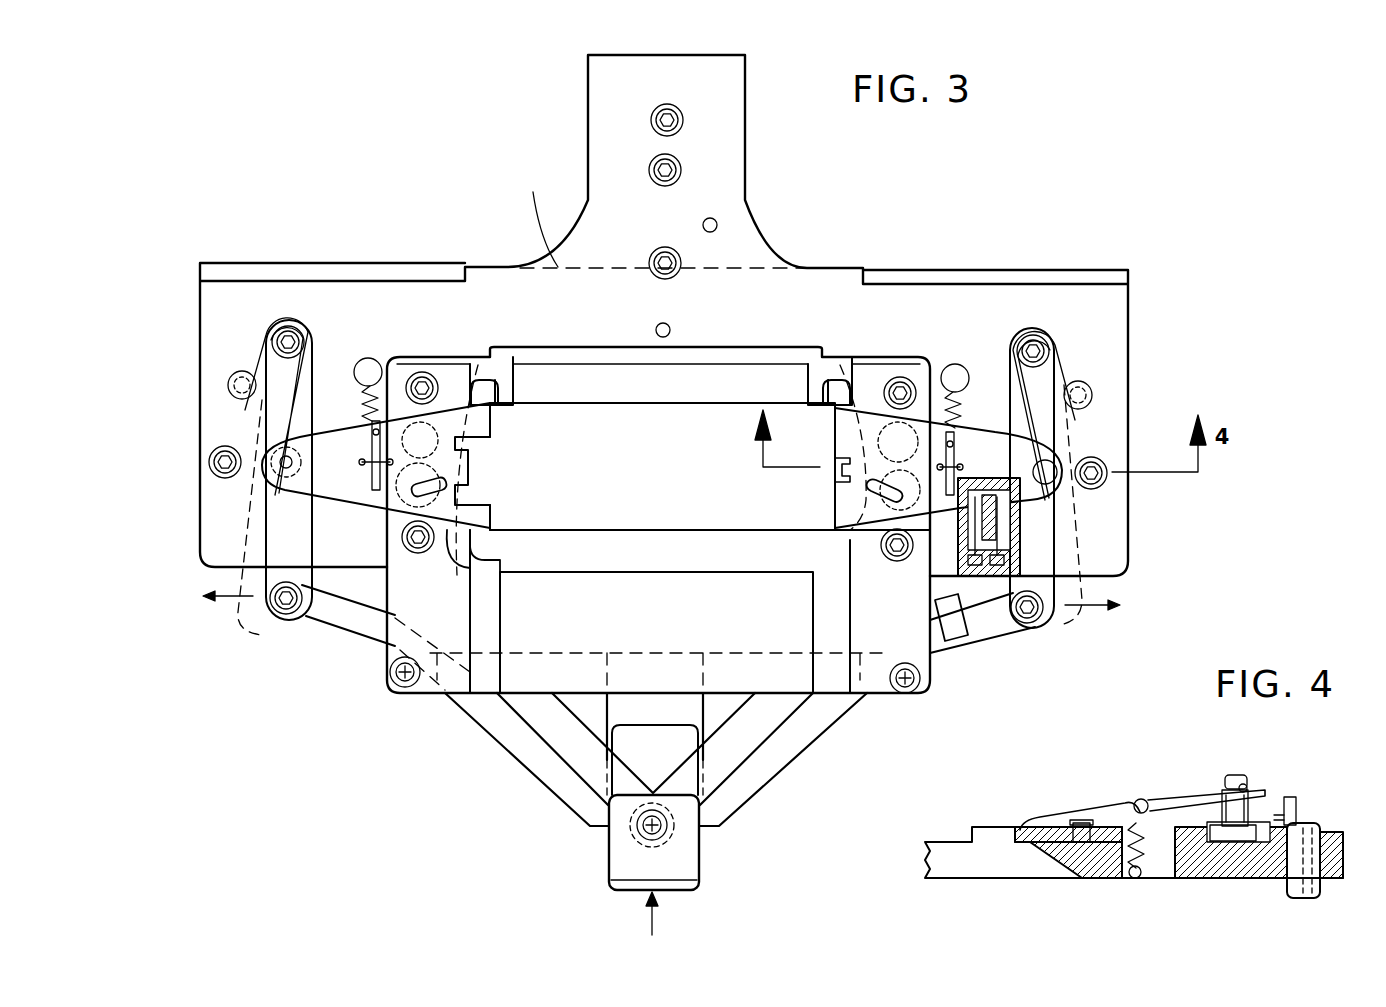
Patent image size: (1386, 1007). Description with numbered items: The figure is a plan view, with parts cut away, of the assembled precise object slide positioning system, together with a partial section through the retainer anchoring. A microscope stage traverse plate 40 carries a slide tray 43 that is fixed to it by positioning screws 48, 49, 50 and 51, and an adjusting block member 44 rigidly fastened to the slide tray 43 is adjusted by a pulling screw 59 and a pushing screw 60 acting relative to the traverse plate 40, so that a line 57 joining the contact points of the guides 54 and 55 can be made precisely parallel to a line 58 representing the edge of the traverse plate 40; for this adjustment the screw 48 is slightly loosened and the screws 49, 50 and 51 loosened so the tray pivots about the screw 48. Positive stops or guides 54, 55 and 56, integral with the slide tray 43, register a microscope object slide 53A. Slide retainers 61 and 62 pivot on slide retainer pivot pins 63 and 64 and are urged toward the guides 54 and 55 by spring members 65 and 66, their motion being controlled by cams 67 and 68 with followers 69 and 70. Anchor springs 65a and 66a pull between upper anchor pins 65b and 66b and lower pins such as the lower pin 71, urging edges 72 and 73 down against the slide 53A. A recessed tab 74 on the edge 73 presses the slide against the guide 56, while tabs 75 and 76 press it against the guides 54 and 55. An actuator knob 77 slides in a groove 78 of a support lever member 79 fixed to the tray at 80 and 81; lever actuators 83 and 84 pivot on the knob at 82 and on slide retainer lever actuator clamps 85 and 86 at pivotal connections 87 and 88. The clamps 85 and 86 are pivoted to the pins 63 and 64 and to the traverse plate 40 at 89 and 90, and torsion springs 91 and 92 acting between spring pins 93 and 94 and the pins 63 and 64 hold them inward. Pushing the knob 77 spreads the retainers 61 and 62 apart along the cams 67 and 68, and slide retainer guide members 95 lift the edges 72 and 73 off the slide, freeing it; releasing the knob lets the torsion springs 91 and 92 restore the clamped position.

In FIG. 3, the microscope stage traverse plate 40 is at (1140, 310).
In FIG. 3, the slide tray 43 is at (880, 703).
In FIG. 3, the adjusting block member 44 is at (1025, 525).
In FIG. 3, the positioning screw 48 is at (432, 378).
In FIG. 3, the positioning screw 49 is at (417, 556).
In FIG. 3, the positioning screw 50 is at (908, 560).
In FIG. 3, the positioning screw 51 is at (877, 370).
In FIG. 3, the microscope object slide 53A is at (592, 513).
In FIG. 3, the positive stop or guide 54 is at (518, 385).
In FIG. 3, the positive stop or guide 55 is at (805, 395).
In FIG. 3, the positive stop or guide 56 is at (478, 462).
In FIG. 3, the line joining guide contact points 57 is at (650, 400).
In FIG. 3, the edge line of stage traverse plate 58 is at (535, 217).
In FIG. 3, the pulling screw 59 is at (985, 572).
In FIG. 3, the pushing screw 60 is at (993, 580).
In FIG. 3, the slide retainer 61 is at (348, 493).
In FIG. 3, the slide retainer 62 is at (830, 433).
In FIG. 3, the slide retainer pivot pin 63 is at (302, 487).
In FIG. 3, the slide retainer pivot pin 64 is at (1000, 558).
In FIG. 4, the slide retainer pivot pin 64 is at (1238, 772).
In FIG. 3, the slide retainer spring member 65 is at (356, 366).
In FIG. 3, the anchor spring 65a is at (362, 462).
In FIG. 3, the upper anchor pin 65b is at (345, 420).
In FIG. 3, the slide retainer spring member 66 is at (968, 378).
In FIG. 3, the anchor spring 66a is at (945, 412).
In FIG. 4, the anchor spring 66a is at (1212, 880).
In FIG. 3, the upper anchor pin 66b is at (942, 467).
In FIG. 4, the upper anchor pin 66b is at (1143, 795).
In FIG. 3, the cam 67 is at (440, 490).
In FIG. 3, the cam 68 is at (870, 490).
In FIG. 3, the follower 69 is at (428, 480).
In FIG. 3, the follower 70 is at (897, 506).
In FIG. 4, the lower pin 71 is at (1140, 880).
In FIG. 3, the edge of slide retainer 72 is at (500, 420).
In FIG. 3, the edge of slide retainer 73 is at (830, 437).
In FIG. 3, the recessed tab 74 is at (840, 472).
In FIG. 3, the tab 75 is at (492, 538).
In FIG. 3, the tab 76 is at (820, 538).
In FIG. 3, the actuator knob 77 is at (688, 860).
In FIG. 3, the groove 78 is at (650, 748).
In FIG. 3, the support lever member 79 is at (625, 705).
In FIG. 3, the fastening point 80 is at (390, 680).
In FIG. 3, the fastening point 81 is at (896, 692).
In FIG. 3, the pivotal attachment 82 is at (645, 837).
In FIG. 3, the lever actuator 83 is at (320, 632).
In FIG. 3, the lever actuator 84 is at (987, 638).
In FIG. 3, the slide retainer lever actuator clamp 85 is at (277, 553).
In FIG. 3, the slide retainer lever actuator clamp 86 is at (1065, 436).
In FIG. 3, the pivotal connection 87 is at (290, 615).
In FIG. 3, the pivotal connection 88 is at (1035, 625).
In FIG. 3, the pivotal attachment to traverse plate 89 is at (282, 328).
In FIG. 3, the pivotal attachment to traverse plate 90 is at (1033, 335).
In FIG. 3, the torsion spring 91 is at (262, 364).
In FIG. 3, the torsion spring 92 is at (1065, 368).
In FIG. 3, the spring pin 93 is at (230, 395).
In FIG. 3, the spring pin 94 is at (1094, 392).
In FIG. 4, the slide retainer guide member 95 is at (1120, 808).